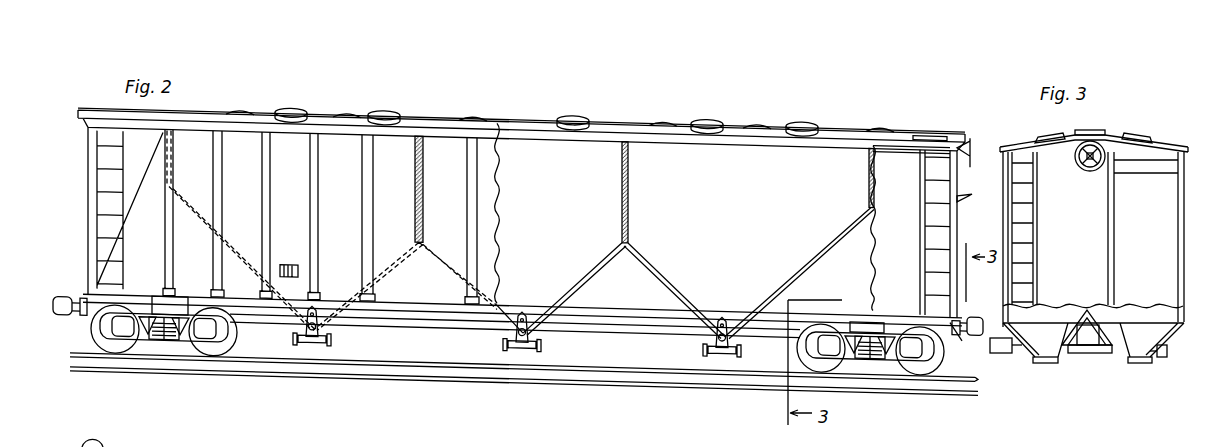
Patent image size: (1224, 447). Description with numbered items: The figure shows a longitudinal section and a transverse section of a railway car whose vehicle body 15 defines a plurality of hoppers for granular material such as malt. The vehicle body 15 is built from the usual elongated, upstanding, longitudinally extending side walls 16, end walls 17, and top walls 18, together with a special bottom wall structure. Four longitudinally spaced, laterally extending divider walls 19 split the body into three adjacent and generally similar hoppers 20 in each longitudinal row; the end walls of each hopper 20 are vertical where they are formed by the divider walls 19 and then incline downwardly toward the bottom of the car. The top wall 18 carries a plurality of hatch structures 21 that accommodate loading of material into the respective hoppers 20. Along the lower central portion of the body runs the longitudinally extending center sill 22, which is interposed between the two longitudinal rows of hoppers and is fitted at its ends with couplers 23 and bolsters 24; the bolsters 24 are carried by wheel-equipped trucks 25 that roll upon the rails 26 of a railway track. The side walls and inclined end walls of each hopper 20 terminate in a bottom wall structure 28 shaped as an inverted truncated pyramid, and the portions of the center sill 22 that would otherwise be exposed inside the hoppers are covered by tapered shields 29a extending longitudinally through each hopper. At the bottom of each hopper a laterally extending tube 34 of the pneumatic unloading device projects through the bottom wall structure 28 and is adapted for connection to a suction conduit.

In FIG. 2, the vehicle body 15 is at (419, 107).
In FIG. 2, the side walls 16 is at (348, 152).
In FIG. 3, the side walls 16 is at (1003, 198).
In FIG. 2, the end walls 17 is at (88, 163).
In FIG. 3, the end walls 17 is at (1157, 266).
In FIG. 2, the top walls 18 is at (522, 128).
In FIG. 3, the top walls 18 is at (1160, 146).
In FIG. 2, the divider walls 19 is at (419, 183).
In FIG. 2, the hoppers 20 is at (548, 215).
In FIG. 2, the hatch structures 21 is at (293, 108).
In FIG. 3, the hatch structures 21 is at (1042, 137).
In FIG. 2, the center sill 22 is at (637, 318).
In FIG. 3, the center sill 22 is at (1083, 308).
In FIG. 2, the couplers 23 is at (63, 302).
In FIG. 2, the bolsters 24 is at (178, 297).
In FIG. 2, the trucks 25 is at (175, 345).
In FIG. 2, the rails 26 is at (316, 370).
In FIG. 2, the bottom wall structure 28 is at (528, 311).
In FIG. 3, the bottom wall structure 28 is at (1053, 347).
In FIG. 2, the tapered shields 29a is at (553, 322).
In FIG. 2, the outer tube 34 is at (512, 335).